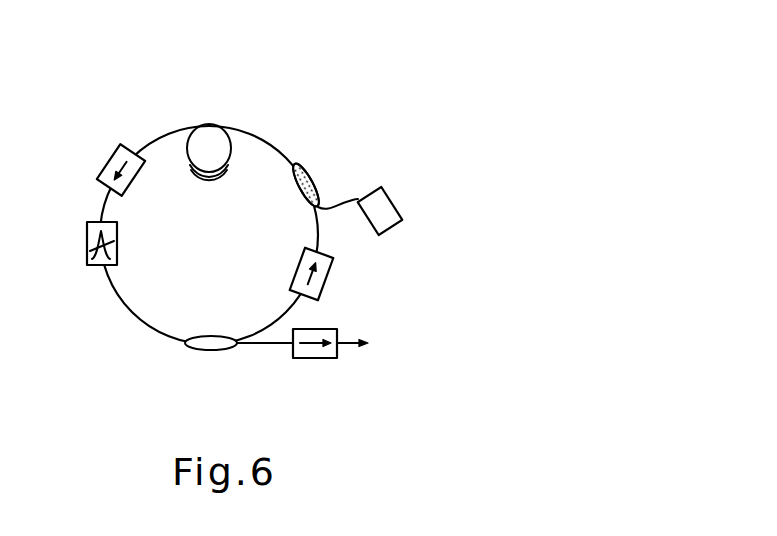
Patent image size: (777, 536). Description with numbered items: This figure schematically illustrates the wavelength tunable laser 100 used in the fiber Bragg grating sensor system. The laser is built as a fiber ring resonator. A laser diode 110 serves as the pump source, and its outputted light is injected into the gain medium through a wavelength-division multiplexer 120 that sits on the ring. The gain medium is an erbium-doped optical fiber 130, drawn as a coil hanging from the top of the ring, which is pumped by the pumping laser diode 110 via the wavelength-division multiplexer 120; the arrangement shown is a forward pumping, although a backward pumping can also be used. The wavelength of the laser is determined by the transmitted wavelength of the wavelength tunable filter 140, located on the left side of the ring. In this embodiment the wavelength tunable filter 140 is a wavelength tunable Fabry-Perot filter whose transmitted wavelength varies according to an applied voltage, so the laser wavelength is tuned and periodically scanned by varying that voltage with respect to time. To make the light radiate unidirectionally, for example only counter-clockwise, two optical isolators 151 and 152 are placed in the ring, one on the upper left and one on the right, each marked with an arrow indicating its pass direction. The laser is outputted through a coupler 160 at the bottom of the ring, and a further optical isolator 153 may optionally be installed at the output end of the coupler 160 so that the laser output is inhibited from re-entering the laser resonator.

The wavelength tunable laser 100 is at (311, 82).
The laser diode 110 is at (392, 199).
The wavelength-division multiplexer 120 is at (309, 180).
The erbium-doped optical fiber 130 is at (206, 134).
The wavelength tunable filter 140 is at (92, 223).
The optical isolator 151 is at (107, 163).
The optical isolator 152 is at (334, 276).
The optical isolator 153 is at (317, 359).
The coupler 160 is at (213, 352).